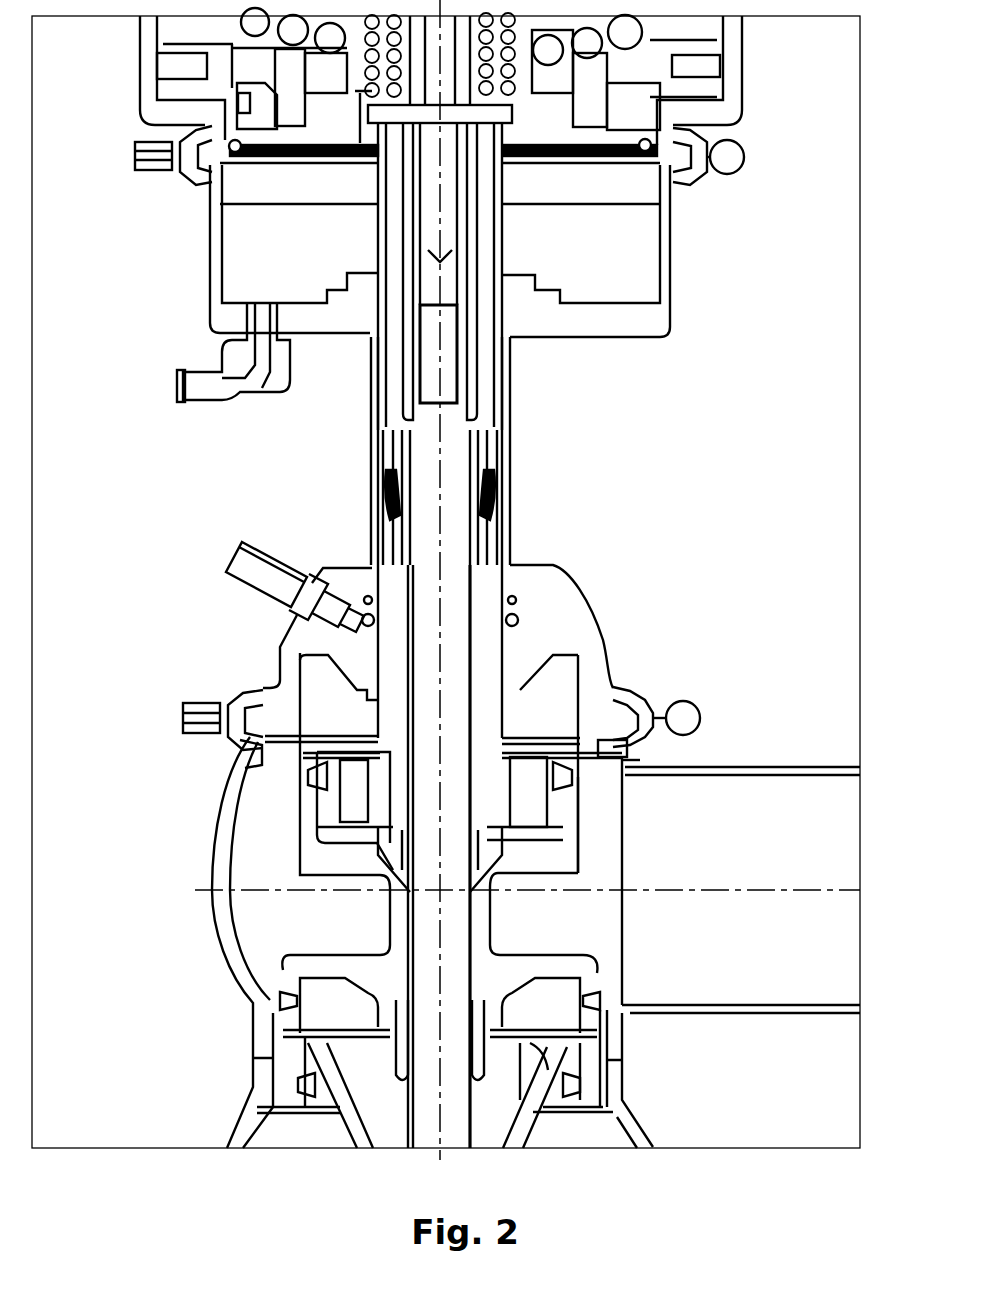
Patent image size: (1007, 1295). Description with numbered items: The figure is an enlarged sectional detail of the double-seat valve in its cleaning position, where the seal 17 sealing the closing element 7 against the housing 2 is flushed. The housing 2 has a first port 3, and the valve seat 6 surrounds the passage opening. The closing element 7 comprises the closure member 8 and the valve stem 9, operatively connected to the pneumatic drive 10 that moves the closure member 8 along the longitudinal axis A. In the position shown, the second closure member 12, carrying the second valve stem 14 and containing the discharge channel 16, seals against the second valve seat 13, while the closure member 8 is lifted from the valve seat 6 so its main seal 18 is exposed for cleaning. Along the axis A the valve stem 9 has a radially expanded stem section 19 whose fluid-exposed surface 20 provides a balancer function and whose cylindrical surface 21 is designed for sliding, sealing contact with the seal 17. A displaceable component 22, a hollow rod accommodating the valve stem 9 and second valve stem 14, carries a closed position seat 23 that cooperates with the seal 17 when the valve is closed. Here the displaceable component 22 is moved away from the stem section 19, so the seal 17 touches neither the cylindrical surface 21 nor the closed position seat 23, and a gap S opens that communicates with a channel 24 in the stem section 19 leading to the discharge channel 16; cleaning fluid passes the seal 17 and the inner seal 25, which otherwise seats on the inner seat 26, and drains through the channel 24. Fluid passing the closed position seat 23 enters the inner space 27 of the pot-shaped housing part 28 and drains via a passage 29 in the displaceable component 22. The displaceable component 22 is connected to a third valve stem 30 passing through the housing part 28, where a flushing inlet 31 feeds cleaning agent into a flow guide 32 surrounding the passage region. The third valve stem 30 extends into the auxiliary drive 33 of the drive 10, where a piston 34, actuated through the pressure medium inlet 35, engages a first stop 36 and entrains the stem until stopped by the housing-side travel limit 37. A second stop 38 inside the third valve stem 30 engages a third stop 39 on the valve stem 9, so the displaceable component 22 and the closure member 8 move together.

The drive 10 is at (735, 68).
The third stop 39 is at (505, 130).
The first stop 36 is at (372, 163).
The piston 34 is at (230, 162).
The housing-side travel limit 37 is at (662, 200).
The second stop 38 is at (520, 197).
The auxiliary drive 33 is at (634, 325).
The pressure medium inlet 35 is at (215, 403).
The third valve stem 30 is at (498, 400).
The flow guide 32 is at (365, 620).
The flushing inlet 31 is at (243, 560).
The pot-shaped housing part 28 is at (573, 617).
The seal 17 is at (583, 737).
The closed position seat 23 is at (627, 758).
The displaceable component 22 is at (317, 757).
The inner seal 25 is at (320, 778).
The inner seat 26 is at (300, 787).
The inner space 27 is at (536, 729).
The passage 29 is at (530, 793).
The stem section 19 is at (317, 855).
The cylindrical surface 21 is at (583, 830).
The channel 24 is at (483, 863).
The valve stem 9 is at (400, 915).
The closing element 7 is at (500, 928).
The surface 20 is at (535, 878).
The first port 3 is at (757, 767).
The gap S is at (620, 777).
The housing 2 is at (220, 930).
The closure member 8 is at (295, 973).
The longitudinal axis A is at (445, 968).
The main seal 18 is at (280, 1000).
The valve seat 6 is at (278, 1012).
The second closure member 12 is at (565, 1053).
The second valve seat 13 is at (580, 1070).
The second valve stem 14 is at (430, 1100).
The discharge channel 16 is at (489, 1113).